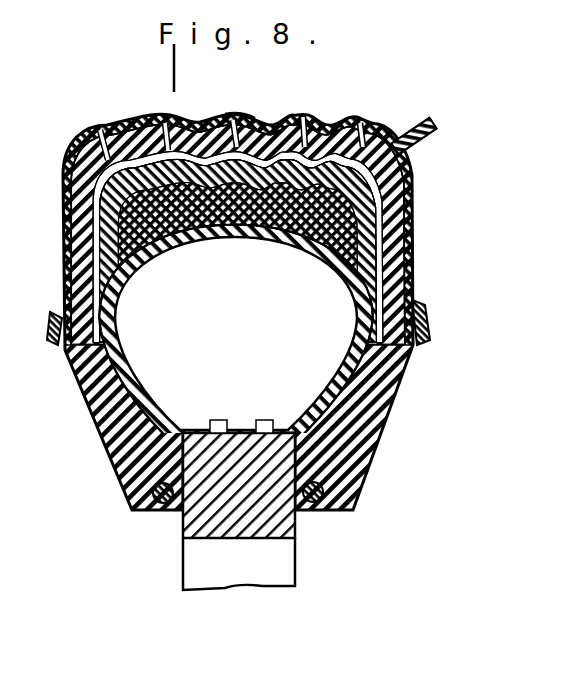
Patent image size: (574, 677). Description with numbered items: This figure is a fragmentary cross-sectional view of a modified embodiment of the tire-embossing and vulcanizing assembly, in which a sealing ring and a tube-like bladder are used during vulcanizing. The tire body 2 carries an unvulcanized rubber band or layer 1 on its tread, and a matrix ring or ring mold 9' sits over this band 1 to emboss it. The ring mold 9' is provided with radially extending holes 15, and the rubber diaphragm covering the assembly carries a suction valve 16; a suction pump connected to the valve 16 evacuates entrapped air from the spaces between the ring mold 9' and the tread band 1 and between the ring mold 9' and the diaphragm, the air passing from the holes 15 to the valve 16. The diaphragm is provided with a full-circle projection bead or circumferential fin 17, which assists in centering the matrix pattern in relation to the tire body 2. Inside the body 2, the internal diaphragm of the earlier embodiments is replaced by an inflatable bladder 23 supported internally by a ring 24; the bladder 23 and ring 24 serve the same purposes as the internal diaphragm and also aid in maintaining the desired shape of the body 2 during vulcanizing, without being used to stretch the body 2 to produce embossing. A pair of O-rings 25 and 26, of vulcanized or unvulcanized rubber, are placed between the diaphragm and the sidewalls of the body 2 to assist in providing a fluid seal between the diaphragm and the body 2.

The unvulcanized rubber band 1 is at (239, 293).
The tire body 2 is at (378, 313).
The ring mold 9' is at (238, 214).
The radially extending holes 15 is at (304, 120).
The suction valve 16 is at (428, 143).
The circumferential fin 17 is at (238, 103).
The inflatable bladder 23 is at (177, 420).
The ring 24 is at (293, 527).
The O-ring 25 is at (53, 332).
The O-ring 26 is at (425, 332).